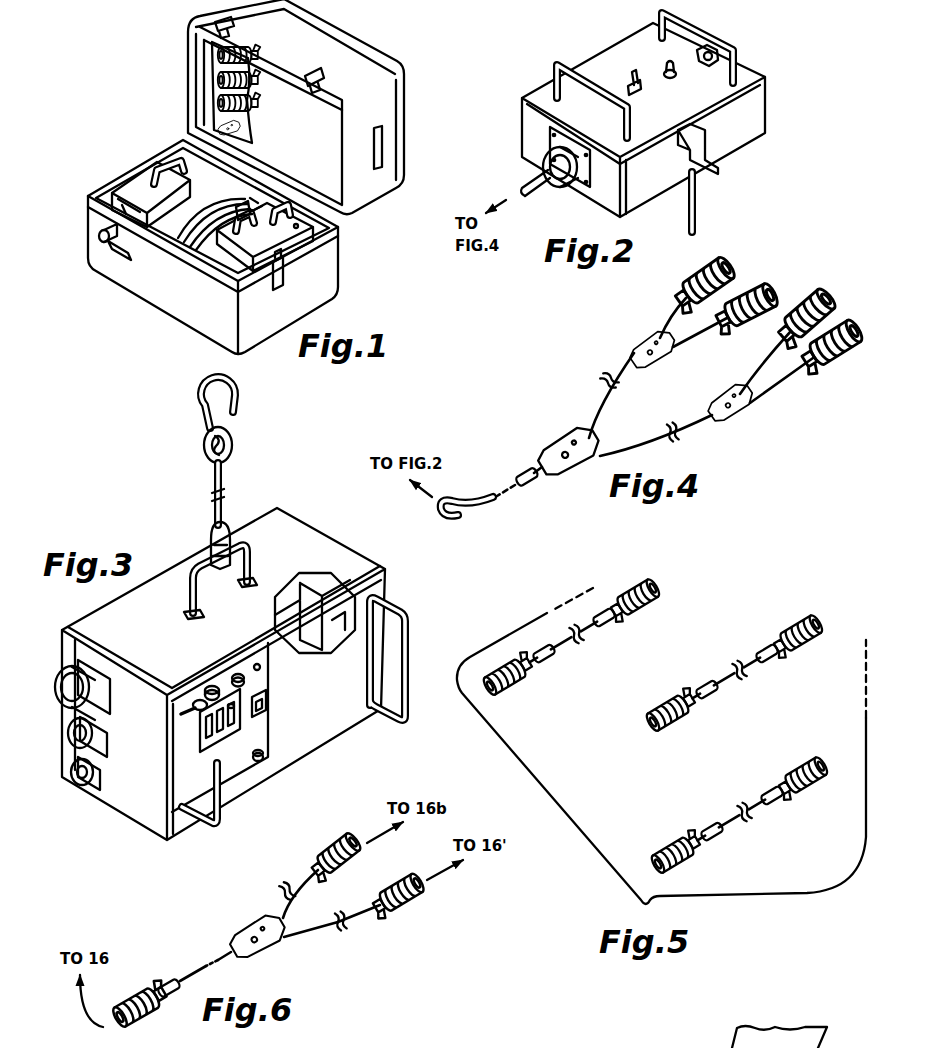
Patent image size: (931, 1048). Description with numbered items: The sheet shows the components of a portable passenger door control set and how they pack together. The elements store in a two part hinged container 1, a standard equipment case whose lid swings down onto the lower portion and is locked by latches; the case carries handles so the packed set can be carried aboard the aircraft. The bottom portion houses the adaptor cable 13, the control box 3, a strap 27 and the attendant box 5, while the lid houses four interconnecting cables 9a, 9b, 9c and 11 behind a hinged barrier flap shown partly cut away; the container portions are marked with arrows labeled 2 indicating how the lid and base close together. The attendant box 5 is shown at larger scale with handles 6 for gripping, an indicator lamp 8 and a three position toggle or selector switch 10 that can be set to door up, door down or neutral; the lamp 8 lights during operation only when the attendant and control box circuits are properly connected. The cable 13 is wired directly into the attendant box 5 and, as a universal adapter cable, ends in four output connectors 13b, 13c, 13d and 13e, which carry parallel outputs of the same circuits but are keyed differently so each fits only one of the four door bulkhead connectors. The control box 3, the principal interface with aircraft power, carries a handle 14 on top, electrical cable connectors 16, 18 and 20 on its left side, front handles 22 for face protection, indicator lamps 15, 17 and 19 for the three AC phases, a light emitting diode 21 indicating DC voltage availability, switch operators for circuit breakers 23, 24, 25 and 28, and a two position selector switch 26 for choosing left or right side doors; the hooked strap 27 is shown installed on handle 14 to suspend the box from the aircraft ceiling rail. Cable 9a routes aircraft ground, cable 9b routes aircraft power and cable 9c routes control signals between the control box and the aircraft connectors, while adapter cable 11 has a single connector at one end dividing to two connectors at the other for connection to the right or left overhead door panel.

In FIG. 1, the two part hinged container 1 is at (241, 177).
In FIG. 1, the carrying case 2 is at (316, 255).
In FIG. 1, the control box 3 is at (140, 184).
In FIG. 3, the control box 3 is at (233, 612).
In FIG. 1, the attendant box 5 is at (292, 217).
In FIG. 2, the attendant box 5 is at (643, 122).
In FIG. 2, the handles 6 is at (714, 37).
In FIG. 2, the indicator lamp 8 is at (675, 76).
In FIG. 1, the cable 9a is at (214, 51).
In FIG. 5, the cable 9a is at (519, 690).
In FIG. 1, the cable 9b is at (214, 77).
In FIG. 5, the cable 9b is at (652, 730).
In FIG. 1, the cable 9c is at (214, 102).
In FIG. 5, the cable 9c is at (655, 855).
In FIG. 2, the three position toggle or selector switch 10 is at (640, 90).
In FIG. 1, the adapter cable 11 is at (218, 126).
In FIG. 6, the adapter cable 11 is at (247, 927).
In FIG. 1, the adaptor cable 13 is at (255, 198).
In FIG. 2, the adaptor cable 13 is at (535, 181).
In FIG. 4, the adaptor cable 13 is at (658, 371).
In FIG. 4, the output connector 13b is at (743, 252).
In FIG. 4, the output connector 13c is at (778, 290).
In FIG. 4, the output connector 13d is at (838, 284).
In FIG. 4, the output connector 13e is at (855, 362).
In FIG. 3, the handle 14 is at (243, 565).
In FIG. 3, the indicator lamp 15 is at (191, 703).
In FIG. 3, the electrical cable connector 16 is at (62, 678).
In FIG. 3, the indicator lamp 17 is at (209, 689).
In FIG. 3, the electrical cable connector 18 is at (66, 737).
In FIG. 3, the indicator lamp 19 is at (235, 678).
In FIG. 3, the electrical cable connector 20 is at (78, 790).
In FIG. 3, the light emitting diode 21 is at (256, 664).
In FIG. 3, the front handles 22 is at (405, 620).
In FIG. 3, the switch operator for circuit breaker 23 is at (244, 733).
In FIG. 3, the switch operator for circuit breaker 24 is at (225, 738).
In FIG. 3, the switch operator for circuit breaker 25 is at (240, 723).
In FIG. 3, the selector switch 26 is at (262, 763).
In FIG. 1, the hooked sling or strap 27 is at (152, 259).
In FIG. 3, the hooked sling or strap 27 is at (228, 450).
In FIG. 3, the switch operator for circuit breaker 28 is at (266, 706).